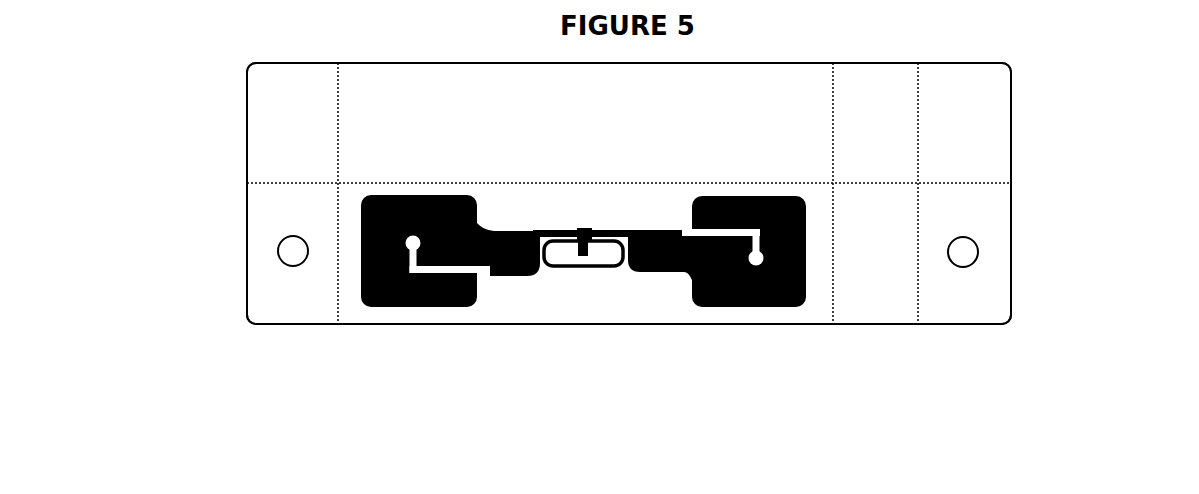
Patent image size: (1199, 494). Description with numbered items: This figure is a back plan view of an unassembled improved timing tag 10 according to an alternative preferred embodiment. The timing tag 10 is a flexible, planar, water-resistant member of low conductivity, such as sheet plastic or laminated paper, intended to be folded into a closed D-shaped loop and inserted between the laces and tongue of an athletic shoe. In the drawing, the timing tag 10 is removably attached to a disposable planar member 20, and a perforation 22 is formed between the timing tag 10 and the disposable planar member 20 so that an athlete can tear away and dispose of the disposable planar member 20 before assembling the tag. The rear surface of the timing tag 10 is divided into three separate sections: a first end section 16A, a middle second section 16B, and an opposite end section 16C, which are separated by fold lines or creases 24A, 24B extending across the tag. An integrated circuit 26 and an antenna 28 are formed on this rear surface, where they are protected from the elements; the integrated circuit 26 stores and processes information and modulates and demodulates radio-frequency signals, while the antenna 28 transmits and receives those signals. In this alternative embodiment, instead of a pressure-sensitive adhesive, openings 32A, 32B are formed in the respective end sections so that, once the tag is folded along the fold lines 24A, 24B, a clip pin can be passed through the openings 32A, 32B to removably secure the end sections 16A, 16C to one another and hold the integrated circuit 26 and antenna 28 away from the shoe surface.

The timing tag 10 is at (1040, 207).
The disposable planar member 20 is at (909, 49).
The perforation 22 is at (231, 183).
The fold line 24A is at (833, 388).
The fold line 24B is at (339, 388).
The first end section 16A is at (965, 299).
The second section 16B is at (492, 309).
The end section 16C is at (266, 309).
The integrated circuit 26 is at (584, 286).
The antenna 28 is at (738, 319).
The opening 32A is at (999, 252).
The opening 32B is at (246, 252).